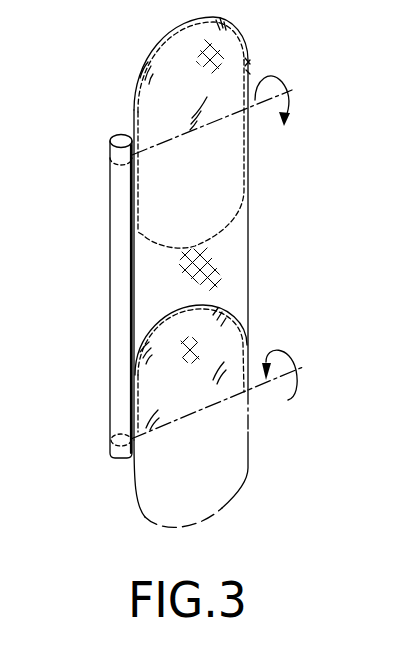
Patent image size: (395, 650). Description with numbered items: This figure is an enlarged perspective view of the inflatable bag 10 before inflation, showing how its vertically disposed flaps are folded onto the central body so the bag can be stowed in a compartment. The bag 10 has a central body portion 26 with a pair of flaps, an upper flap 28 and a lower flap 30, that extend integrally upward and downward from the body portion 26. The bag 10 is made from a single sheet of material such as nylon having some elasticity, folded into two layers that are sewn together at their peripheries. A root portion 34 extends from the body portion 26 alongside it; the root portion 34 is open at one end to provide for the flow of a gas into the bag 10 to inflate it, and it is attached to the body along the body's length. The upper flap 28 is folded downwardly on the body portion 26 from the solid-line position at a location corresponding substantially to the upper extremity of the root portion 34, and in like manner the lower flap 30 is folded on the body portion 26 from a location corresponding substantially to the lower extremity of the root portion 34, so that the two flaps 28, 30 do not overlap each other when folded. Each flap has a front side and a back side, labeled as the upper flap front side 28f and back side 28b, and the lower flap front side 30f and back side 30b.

The inflatable bag 10 is at (186, 264).
The body portion 26 is at (222, 259).
The upper flap 28 is at (189, 220).
The front side of upper flap 28f is at (174, 33).
The back side of upper flap 28b is at (219, 177).
The lower flap 30 is at (175, 369).
The front side of lower flap 30f is at (147, 387).
The back side of lower flap 30b is at (217, 498).
The root portion 34 is at (115, 176).